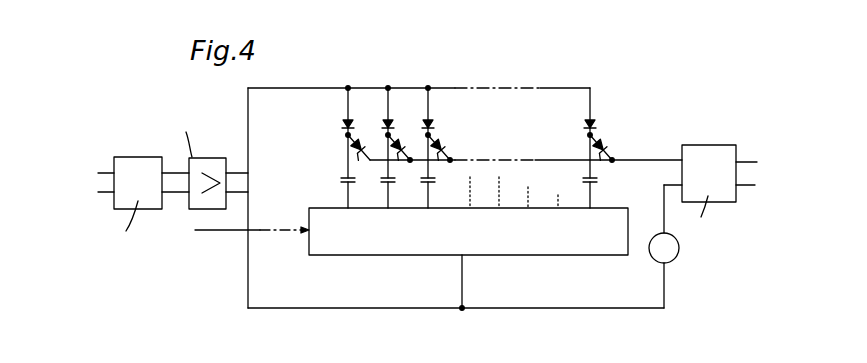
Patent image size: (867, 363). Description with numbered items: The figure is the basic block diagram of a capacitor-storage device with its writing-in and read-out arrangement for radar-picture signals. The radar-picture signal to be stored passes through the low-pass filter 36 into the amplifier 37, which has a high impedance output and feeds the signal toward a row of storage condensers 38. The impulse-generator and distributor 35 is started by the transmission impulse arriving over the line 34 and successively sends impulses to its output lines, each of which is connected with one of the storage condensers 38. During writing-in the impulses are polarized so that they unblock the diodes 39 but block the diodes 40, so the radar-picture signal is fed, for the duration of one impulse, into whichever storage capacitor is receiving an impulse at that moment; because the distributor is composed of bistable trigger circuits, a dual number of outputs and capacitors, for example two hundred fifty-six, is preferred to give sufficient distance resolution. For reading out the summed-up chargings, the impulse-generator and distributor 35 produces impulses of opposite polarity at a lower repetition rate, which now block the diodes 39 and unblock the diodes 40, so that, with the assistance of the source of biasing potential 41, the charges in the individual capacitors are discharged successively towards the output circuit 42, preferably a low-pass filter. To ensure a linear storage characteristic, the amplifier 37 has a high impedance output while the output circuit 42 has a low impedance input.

The line 34 is at (236, 233).
The impulse-generator and distributor 35 is at (377, 255).
The low-pass filter 36 is at (96, 201).
The amplifier 37 is at (194, 163).
The storage condensers 38 is at (340, 180).
The diodes 39 is at (340, 125).
The diodes 40 is at (348, 152).
The source of biasing potential 41 is at (673, 266).
The output circuit 42 is at (719, 197).